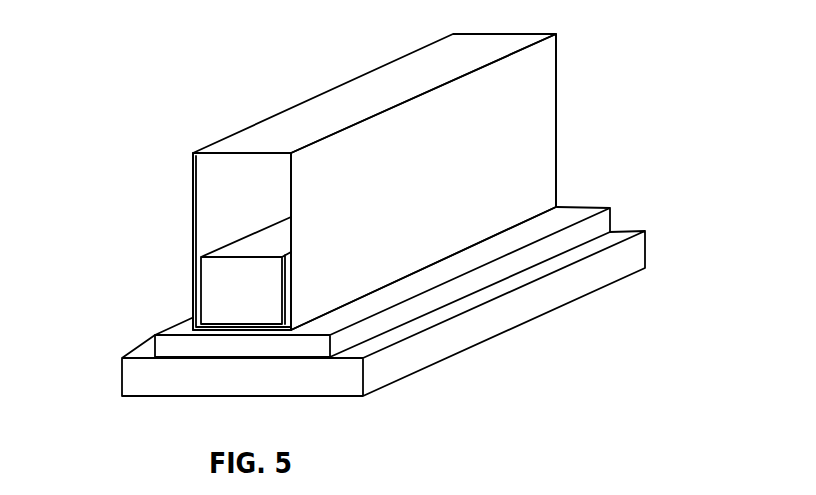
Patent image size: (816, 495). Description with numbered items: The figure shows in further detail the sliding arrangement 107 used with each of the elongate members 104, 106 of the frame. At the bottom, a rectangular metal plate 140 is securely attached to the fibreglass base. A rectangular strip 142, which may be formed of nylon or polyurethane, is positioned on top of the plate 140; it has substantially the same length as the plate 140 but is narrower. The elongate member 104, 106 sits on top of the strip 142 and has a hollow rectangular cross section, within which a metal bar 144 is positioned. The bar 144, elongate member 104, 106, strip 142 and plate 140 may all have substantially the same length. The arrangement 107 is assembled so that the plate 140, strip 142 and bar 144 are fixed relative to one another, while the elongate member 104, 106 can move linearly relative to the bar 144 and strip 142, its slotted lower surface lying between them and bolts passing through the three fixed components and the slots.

The elongate member 104 is at (192, 187).
The elongate member 106 is at (242, 241).
The arrangement 107 is at (660, 160).
The rectangular metal plate 140 is at (122, 381).
The rectangular strip 142 is at (156, 334).
The metal bar 144 is at (210, 283).